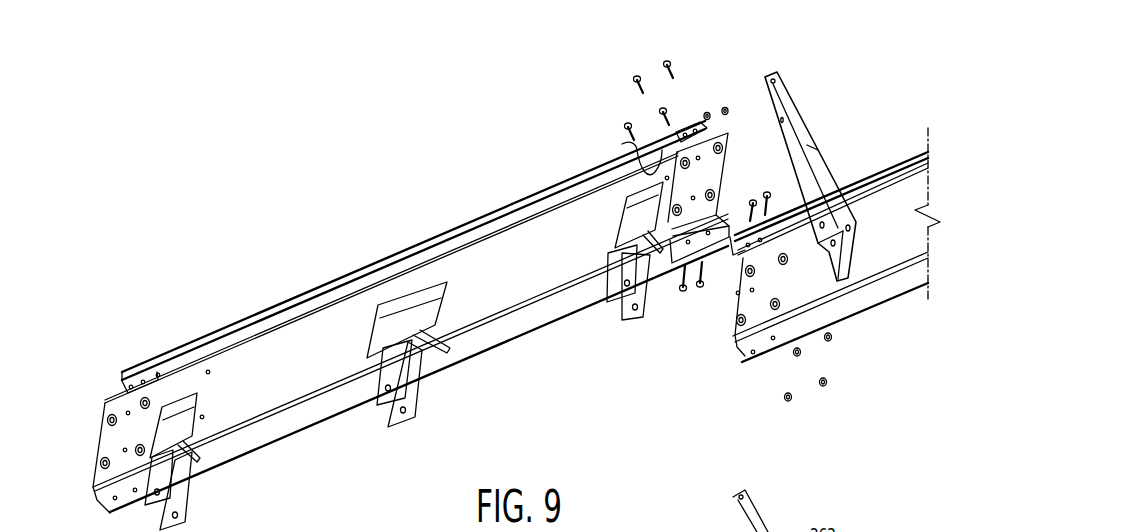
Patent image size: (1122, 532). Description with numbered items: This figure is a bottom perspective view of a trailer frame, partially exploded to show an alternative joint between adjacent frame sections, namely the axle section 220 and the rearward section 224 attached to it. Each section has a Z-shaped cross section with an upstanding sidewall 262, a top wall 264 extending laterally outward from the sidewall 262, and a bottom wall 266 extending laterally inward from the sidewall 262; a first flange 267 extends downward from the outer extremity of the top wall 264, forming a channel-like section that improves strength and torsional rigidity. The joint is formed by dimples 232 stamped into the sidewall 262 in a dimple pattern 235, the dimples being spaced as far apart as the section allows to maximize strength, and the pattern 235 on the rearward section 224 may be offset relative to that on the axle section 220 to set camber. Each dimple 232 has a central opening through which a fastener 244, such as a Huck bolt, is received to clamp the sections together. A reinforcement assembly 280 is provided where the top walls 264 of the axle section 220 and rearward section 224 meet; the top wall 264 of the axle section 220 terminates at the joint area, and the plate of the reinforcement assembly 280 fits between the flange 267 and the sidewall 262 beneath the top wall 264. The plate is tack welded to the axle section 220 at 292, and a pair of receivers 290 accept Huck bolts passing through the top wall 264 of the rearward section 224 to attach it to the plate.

The axle section 220 is at (482, 263).
The rearward section 224 is at (882, 254).
The dimples 232 is at (728, 146).
The dimple pattern 235 is at (664, 255).
The fastener 244 is at (665, 63).
The sidewall 262 is at (523, 232).
The top wall 264 is at (543, 200).
The bottom wall 266 is at (532, 308).
The first flange 267 is at (572, 186).
The reinforcement assembly 280 is at (699, 113).
The receivers 290 is at (678, 128).
The tack weld 292 is at (688, 178).